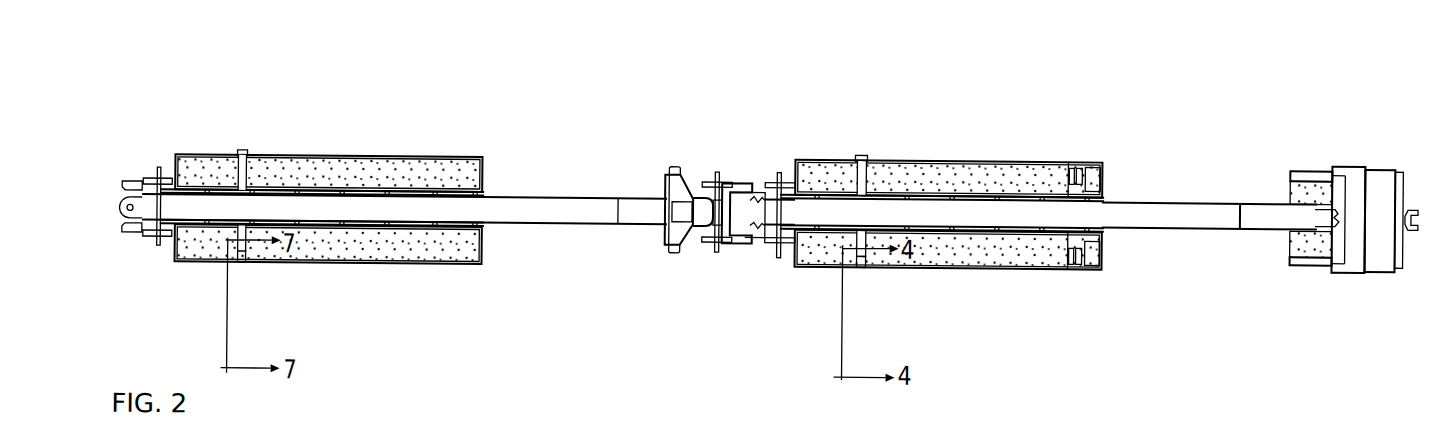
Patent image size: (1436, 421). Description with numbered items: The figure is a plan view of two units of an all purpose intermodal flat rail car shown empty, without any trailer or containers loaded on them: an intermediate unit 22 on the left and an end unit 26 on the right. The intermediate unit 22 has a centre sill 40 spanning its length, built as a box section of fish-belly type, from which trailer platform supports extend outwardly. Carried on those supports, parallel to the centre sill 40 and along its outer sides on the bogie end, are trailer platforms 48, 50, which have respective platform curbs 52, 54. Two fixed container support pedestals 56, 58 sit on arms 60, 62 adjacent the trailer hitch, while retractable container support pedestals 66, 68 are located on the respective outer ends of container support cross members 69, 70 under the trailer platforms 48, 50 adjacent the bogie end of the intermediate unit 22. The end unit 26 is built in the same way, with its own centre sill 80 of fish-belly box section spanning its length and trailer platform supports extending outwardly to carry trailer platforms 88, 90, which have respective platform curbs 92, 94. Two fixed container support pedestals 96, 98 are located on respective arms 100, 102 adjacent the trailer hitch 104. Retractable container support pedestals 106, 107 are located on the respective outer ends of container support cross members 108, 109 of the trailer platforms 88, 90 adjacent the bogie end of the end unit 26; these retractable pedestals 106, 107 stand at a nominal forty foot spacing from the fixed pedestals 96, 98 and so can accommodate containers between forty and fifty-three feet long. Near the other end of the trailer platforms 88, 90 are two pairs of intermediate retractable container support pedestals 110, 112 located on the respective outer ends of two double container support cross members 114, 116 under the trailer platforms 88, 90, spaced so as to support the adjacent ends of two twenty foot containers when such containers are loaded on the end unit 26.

The intermediate unit 22 is at (333, 130).
The end unit 26 is at (978, 128).
The centre sill 40 is at (558, 228).
The trailer platform 48 is at (397, 265).
The trailer platform 50 is at (397, 168).
The platform curb 52 is at (460, 267).
The platform curb 54 is at (456, 163).
The fixed container support pedestal 56 is at (666, 250).
The fixed container support pedestal 58 is at (665, 173).
The arm 60 is at (681, 253).
The arm 62 is at (681, 168).
The retractable container support pedestal 66 is at (241, 266).
The retractable container support pedestal 68 is at (243, 158).
The container support cross member 69 is at (228, 234).
The container support cross member 70 is at (252, 184).
The centre sill 80 is at (1211, 230).
The trailer platform 88 is at (980, 263).
The trailer platform 90 is at (943, 163).
The platform curb 92 is at (1035, 265).
The platform curb 94 is at (1031, 160).
The fixed container support pedestal 96 is at (1296, 260).
The fixed container support pedestal 98 is at (1298, 170).
The arm 100 is at (1312, 260).
The arm 102 is at (1318, 167).
The trailer hitch 104 is at (1343, 205).
The retractable container support pedestal 106 is at (862, 258).
The retractable container support pedestal 107 is at (862, 160).
The container support cross member 108 is at (847, 236).
The container support cross member 109 is at (857, 181).
The intermediate retractable container support pedestal 110 is at (1085, 267).
The intermediate retractable container support pedestal 112 is at (1082, 159).
The double container support cross member 114 is at (1088, 243).
The double container support cross member 116 is at (1103, 184).